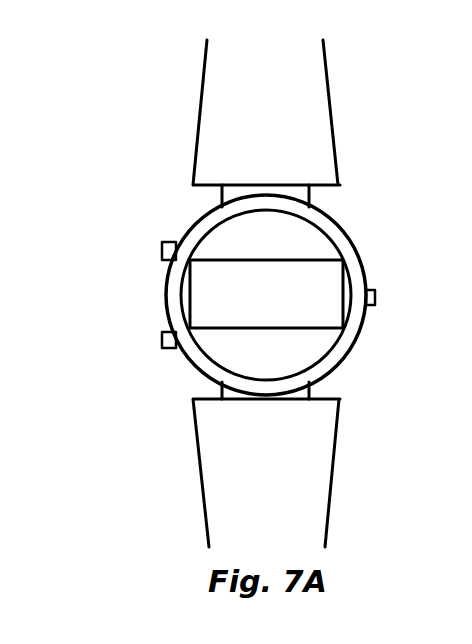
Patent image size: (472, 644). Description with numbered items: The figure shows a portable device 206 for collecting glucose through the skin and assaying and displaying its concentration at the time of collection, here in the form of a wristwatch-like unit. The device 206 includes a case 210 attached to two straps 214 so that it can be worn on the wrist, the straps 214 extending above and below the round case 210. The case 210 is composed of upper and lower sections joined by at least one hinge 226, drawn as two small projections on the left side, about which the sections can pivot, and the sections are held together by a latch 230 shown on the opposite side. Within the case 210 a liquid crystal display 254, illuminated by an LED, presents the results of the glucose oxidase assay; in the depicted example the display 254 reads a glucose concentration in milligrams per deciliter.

The device 206 is at (157, 201).
The case 210 is at (166, 293).
The straps 214 is at (308, 132).
The hinge 226 is at (162, 245).
The latch 230 is at (372, 290).
The liquid crystal display 254 is at (332, 315).